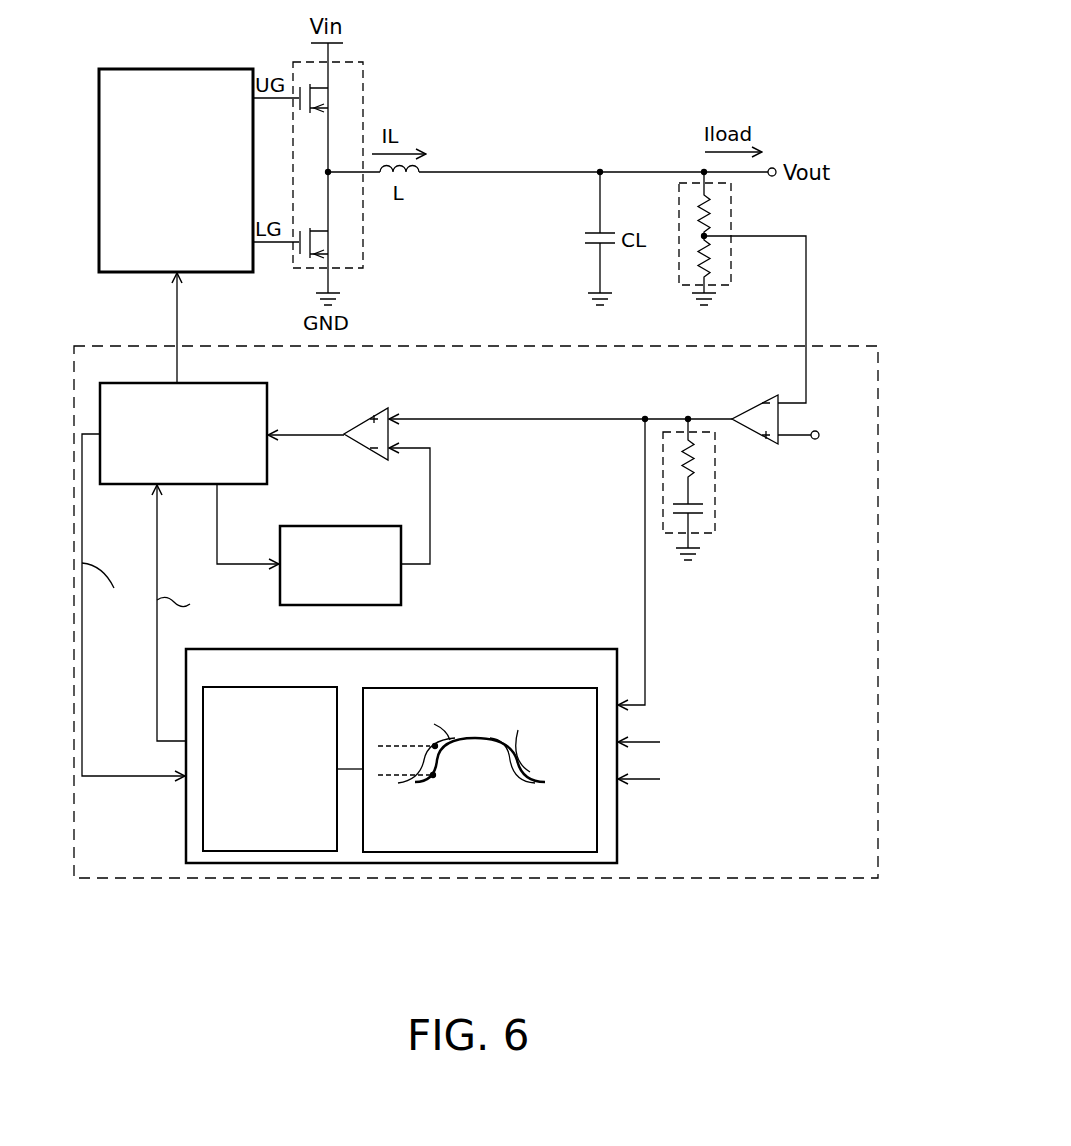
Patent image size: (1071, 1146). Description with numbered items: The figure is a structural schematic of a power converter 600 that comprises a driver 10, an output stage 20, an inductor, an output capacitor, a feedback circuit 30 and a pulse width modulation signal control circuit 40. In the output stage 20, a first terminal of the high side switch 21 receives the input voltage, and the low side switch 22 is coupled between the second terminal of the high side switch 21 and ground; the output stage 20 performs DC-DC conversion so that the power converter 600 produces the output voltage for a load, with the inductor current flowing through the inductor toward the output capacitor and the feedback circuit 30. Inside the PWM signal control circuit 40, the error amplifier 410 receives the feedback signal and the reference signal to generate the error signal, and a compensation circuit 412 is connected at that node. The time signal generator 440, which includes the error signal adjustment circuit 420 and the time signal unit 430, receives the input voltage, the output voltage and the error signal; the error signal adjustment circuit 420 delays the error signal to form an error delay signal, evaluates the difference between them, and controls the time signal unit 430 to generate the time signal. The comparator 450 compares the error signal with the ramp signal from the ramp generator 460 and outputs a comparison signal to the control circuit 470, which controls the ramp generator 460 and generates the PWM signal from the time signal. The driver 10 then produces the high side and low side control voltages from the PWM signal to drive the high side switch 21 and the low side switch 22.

The driver 10 is at (178, 68).
The output stage 20 is at (353, 175).
The high side switch 21 is at (330, 128).
The low side switch 22 is at (330, 232).
The feedback circuit 30 is at (731, 204).
The pulse width modulation signal control circuit 40 is at (522, 880).
The error amplifier 410 is at (752, 404).
The compensation circuit 412 is at (715, 512).
The error signal adjustment circuit 420 is at (480, 688).
The time signal unit 430 is at (267, 687).
The time signal generator 440 is at (617, 848).
The comparator 450 is at (362, 418).
The ramp generator 460 is at (323, 526).
The control circuit 470 is at (240, 383).
The power converter 600 is at (876, 965).